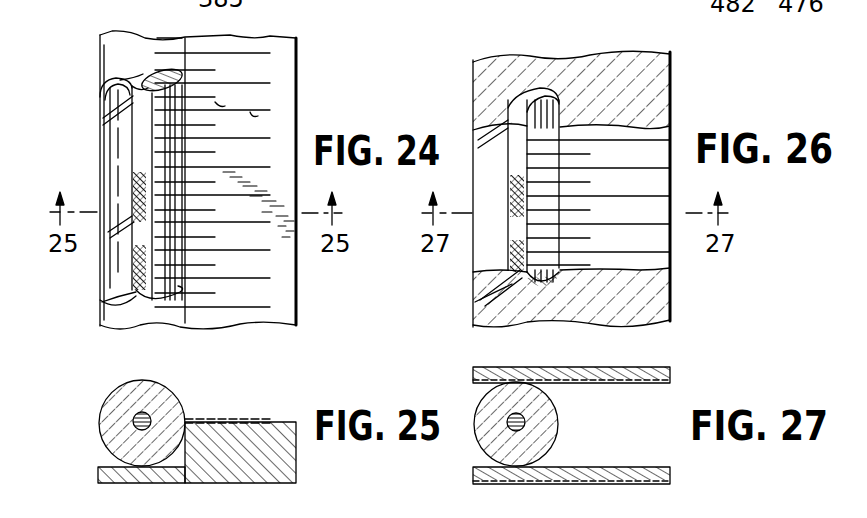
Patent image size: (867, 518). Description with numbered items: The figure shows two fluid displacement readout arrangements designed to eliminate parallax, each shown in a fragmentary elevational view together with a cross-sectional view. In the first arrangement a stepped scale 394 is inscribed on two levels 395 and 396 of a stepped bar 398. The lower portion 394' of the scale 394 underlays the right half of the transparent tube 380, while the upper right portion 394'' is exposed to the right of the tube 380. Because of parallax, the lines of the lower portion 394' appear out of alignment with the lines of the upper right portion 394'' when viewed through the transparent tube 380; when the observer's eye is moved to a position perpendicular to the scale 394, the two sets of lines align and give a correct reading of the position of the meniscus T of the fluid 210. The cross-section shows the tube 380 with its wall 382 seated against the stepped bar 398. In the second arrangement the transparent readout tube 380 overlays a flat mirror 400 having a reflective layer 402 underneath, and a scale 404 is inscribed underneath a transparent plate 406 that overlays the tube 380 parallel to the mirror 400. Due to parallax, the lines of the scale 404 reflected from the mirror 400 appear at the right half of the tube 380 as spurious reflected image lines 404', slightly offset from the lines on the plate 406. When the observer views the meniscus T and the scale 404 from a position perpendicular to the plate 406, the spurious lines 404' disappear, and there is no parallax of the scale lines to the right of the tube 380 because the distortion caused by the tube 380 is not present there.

In FIG. 24, the stepped bar 398 is at (122, 45).
In FIG. 25, the stepped bar 398 is at (215, 470).
In FIG. 24, the lower level of stepped bar 395 is at (112, 57).
In FIG. 25, the lower level of stepped bar 395 is at (105, 467).
In FIG. 24, the upper level of stepped bar 396 is at (282, 70).
In FIG. 25, the upper level of stepped bar 396 is at (290, 420).
In FIG. 24, the stepped scale 394 is at (237, 153).
In FIG. 24, the lower portion of scale 394' is at (142, 25).
In FIG. 24, the upper right portion of scale 394'' is at (289, 100).
In FIG. 25, the upper right portion of scale 394'' is at (240, 402).
In FIG. 24, the transparent tube 380 is at (110, 110).
In FIG. 25, the transparent tube 380 is at (145, 390).
In FIG. 26, the transparent tube 380 is at (487, 95).
In FIG. 27, the transparent tube 380 is at (540, 411).
In FIG. 24, the roller sleeve 382 is at (132, 128).
In FIG. 25, the roller sleeve 382 is at (138, 413).
In FIG. 26, the roller sleeve 382 is at (480, 108).
In FIG. 27, the roller sleeve 382 is at (532, 430).
In FIG. 24, the meniscus T is at (139, 172).
In FIG. 26, the meniscus T is at (507, 180).
In FIG. 24, the fluid 210 is at (135, 268).
In FIG. 25, the fluid 210 is at (130, 423).
In FIG. 26, the fluid 210 is at (510, 283).
In FIG. 27, the fluid 210 is at (506, 425).
In FIG. 26, the flat mirror 400 is at (555, 62).
In FIG. 27, the flat mirror 400 is at (606, 467).
In FIG. 27, the reflective layer 402 is at (614, 487).
In FIG. 26, the scale 404 is at (598, 202).
In FIG. 27, the scale 404 is at (571, 401).
In FIG. 26, the spurious reflected image lines 404' is at (605, 111).
In FIG. 26, the transparent plate 406 is at (660, 130).
In FIG. 27, the transparent plate 406 is at (565, 368).